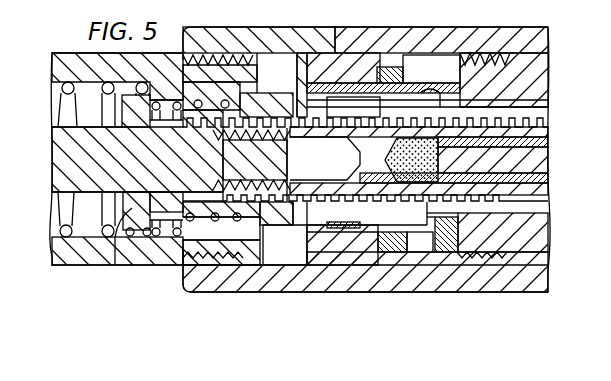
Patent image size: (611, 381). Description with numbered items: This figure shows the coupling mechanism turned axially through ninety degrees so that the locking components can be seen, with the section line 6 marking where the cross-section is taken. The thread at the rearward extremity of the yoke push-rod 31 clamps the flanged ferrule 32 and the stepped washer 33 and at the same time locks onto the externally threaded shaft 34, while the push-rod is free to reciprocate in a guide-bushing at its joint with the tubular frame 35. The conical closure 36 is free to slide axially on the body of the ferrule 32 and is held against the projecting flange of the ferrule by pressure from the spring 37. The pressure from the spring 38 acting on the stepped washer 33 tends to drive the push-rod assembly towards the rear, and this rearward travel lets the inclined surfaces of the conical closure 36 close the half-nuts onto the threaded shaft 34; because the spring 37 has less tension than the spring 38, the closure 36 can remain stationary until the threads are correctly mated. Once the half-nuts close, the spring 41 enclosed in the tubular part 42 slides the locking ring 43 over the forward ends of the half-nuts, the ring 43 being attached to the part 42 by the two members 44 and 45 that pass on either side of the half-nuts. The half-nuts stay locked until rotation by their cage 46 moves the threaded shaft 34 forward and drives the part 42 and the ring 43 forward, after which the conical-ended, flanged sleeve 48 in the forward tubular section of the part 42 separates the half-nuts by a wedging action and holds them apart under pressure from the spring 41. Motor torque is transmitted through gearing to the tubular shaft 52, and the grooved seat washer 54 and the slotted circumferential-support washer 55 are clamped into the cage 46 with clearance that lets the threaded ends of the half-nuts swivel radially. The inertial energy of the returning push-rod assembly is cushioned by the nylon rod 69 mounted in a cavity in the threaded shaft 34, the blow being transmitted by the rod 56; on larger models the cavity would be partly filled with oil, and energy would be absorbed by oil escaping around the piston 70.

The section line 6- 6 is at (390, 14).
The yoke push-rod 31 is at (88, 160).
The flanged ferrule 32 is at (190, 123).
The stepped washer 33 is at (115, 265).
The externally threaded shaft 34 is at (512, 205).
The tubular frame 35 is at (100, 254).
The conical closure 36 is at (260, 100).
The spring 37 is at (144, 262).
The spring 38 is at (62, 89).
The spring 41 is at (508, 210).
The tubular part 42 is at (548, 117).
The locking ring 43 is at (320, 213).
The member 44 is at (347, 90).
The member 45 is at (338, 236).
The half-nuts cage 46 is at (360, 253).
The conical-ended flanged sleeve 48 is at (512, 205).
The tubular shaft 52 is at (527, 82).
The grooved half-nuts radial-support seat washer 54 is at (468, 203).
The slotted half-nuts circumferential-support washer 55 is at (345, 88).
The rod 56 is at (528, 158).
The nylon rod 69 is at (452, 140).
The piston 70 is at (490, 140).